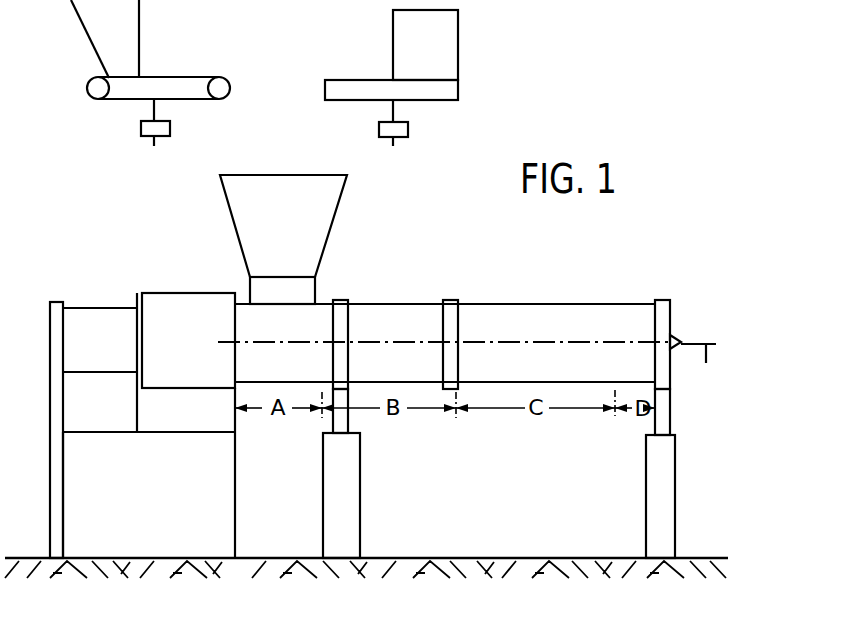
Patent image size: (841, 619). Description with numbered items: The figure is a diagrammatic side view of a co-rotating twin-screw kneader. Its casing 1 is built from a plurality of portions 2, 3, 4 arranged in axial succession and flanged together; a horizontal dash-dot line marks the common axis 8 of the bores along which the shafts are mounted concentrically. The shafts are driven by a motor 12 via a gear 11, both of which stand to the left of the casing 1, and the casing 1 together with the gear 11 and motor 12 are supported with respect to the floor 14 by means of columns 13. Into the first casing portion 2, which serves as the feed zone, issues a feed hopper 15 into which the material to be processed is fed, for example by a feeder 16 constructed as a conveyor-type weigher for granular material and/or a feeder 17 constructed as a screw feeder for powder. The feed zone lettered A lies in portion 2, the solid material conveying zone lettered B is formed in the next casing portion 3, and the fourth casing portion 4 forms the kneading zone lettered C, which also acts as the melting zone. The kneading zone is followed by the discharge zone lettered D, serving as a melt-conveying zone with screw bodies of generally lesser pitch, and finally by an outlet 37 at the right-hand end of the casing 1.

The casing 1 is at (446, 265).
The first casing portion 2 is at (303, 332).
The casing portion 3 is at (396, 320).
The fourth casing portion 4 is at (566, 316).
The axis 8 is at (714, 367).
The gear 11 is at (182, 328).
The motor 12 is at (88, 327).
The columns 13 is at (340, 422).
The floor 14 is at (483, 558).
The feed hopper 15 is at (282, 198).
The feeder 16 is at (186, 87).
The feeder 17 is at (354, 88).
The outlet 37 is at (674, 340).